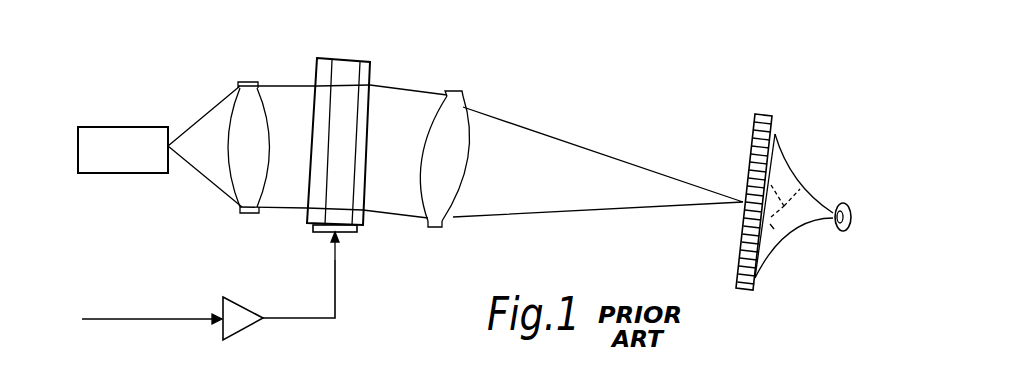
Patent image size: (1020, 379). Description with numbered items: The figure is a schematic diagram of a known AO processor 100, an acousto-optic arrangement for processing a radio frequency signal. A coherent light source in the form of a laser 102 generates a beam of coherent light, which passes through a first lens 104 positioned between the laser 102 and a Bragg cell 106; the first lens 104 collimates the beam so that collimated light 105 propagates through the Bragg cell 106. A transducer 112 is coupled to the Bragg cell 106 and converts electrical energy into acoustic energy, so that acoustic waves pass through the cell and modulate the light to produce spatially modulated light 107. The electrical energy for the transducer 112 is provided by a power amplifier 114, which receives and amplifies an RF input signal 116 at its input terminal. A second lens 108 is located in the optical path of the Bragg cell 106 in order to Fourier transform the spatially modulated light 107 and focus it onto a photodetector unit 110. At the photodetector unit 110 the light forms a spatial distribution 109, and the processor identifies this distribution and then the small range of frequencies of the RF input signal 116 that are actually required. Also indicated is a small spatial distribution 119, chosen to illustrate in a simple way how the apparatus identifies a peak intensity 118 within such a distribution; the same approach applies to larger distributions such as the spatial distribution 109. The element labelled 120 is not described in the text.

The AO processor 100 is at (426, 276).
The laser 102 is at (123, 174).
The first lens 104 is at (252, 216).
The collimated light 105 is at (290, 210).
The Bragg cell 106 is at (329, 71).
The spatially modulated light 107 is at (394, 87).
The second lens 108 is at (452, 82).
The spatial distribution 109 is at (822, 200).
The photodetector unit 110 is at (742, 293).
The transducer 112 is at (345, 232).
The power amplifier 114 is at (240, 332).
The RF input signal 116 is at (143, 326).
The peak intensity 118 is at (801, 188).
The small spatial distribution 119 is at (770, 224).
The eye pupil 120 is at (852, 218).